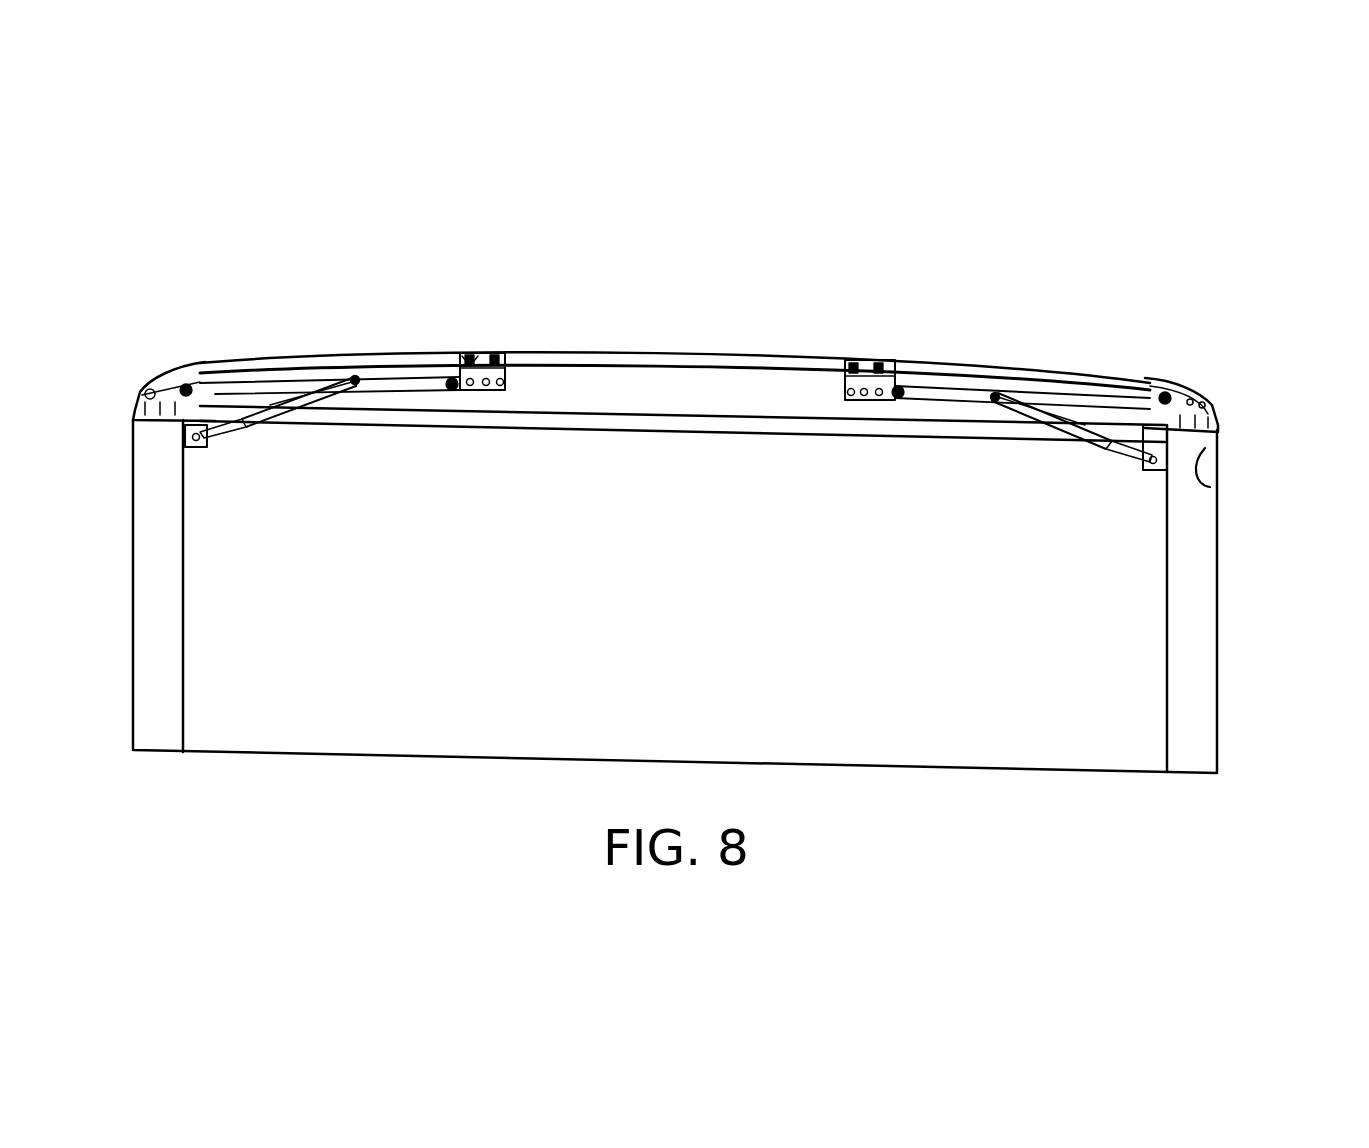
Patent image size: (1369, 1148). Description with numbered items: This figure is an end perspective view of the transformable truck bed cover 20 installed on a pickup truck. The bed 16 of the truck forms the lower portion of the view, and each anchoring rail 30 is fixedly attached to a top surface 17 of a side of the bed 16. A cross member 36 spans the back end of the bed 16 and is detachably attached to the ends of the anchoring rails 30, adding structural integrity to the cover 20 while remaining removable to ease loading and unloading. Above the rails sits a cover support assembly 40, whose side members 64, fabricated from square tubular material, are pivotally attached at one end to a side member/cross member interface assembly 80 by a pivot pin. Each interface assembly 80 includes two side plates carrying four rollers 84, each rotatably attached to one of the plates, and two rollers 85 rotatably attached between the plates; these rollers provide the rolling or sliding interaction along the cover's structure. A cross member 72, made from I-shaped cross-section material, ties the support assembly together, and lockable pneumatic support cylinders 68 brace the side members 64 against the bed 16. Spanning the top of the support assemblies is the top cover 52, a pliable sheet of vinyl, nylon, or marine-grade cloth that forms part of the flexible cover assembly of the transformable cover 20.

The bed 16 is at (818, 692).
The top surface 17 is at (1210, 487).
The transformable truck bed cover 20 is at (805, 264).
The anchoring rail 30 is at (1215, 418).
The cross member 36 is at (482, 415).
The cover support assembly 40 is at (1100, 385).
The top cover 52 is at (172, 378).
The side member 64 is at (392, 382).
The pneumatic support cylinder 68 is at (250, 425).
The cross member 72 is at (312, 365).
The side member/cross member interface assembly 80 is at (487, 352).
The roller 84 is at (462, 358).
The roller 85 is at (505, 382).